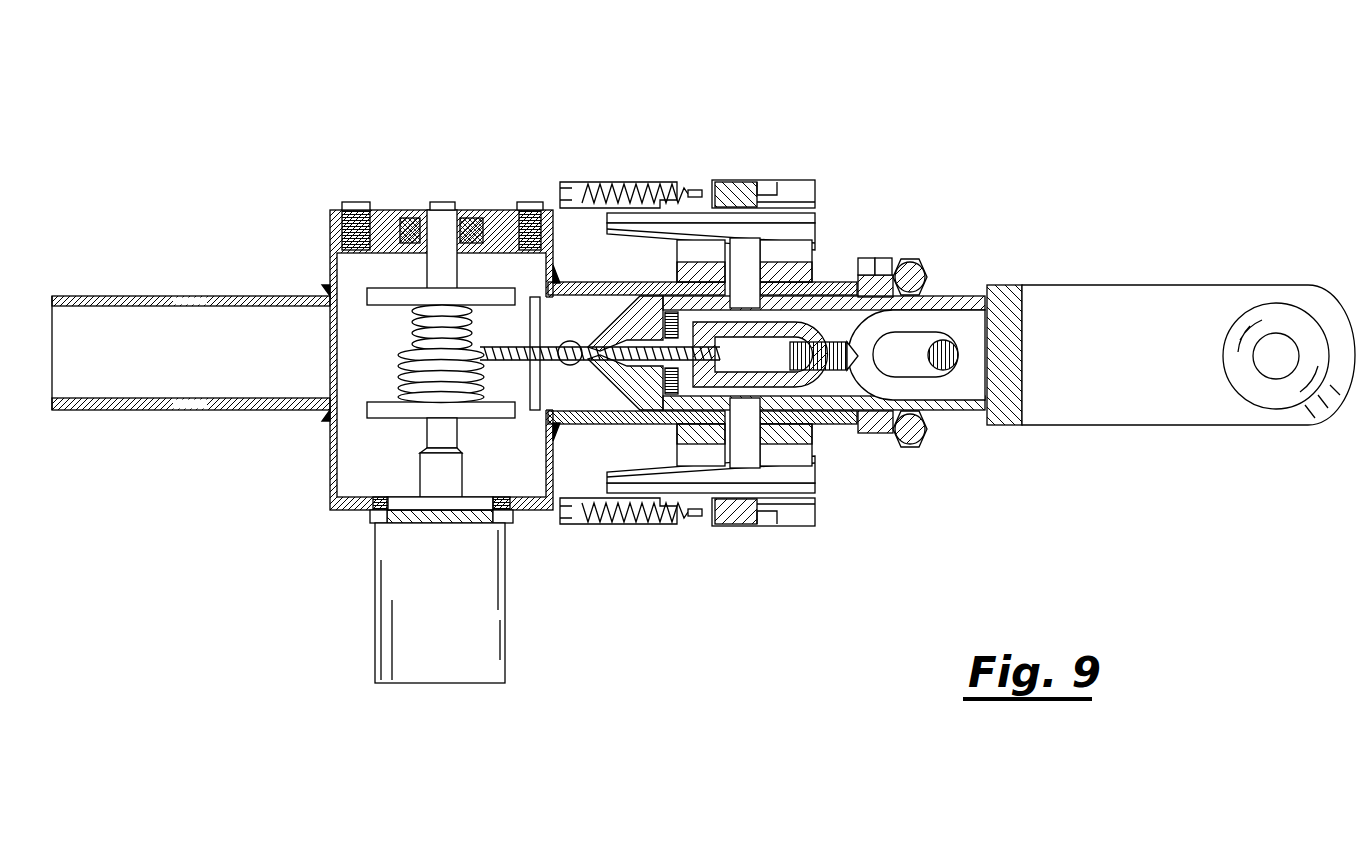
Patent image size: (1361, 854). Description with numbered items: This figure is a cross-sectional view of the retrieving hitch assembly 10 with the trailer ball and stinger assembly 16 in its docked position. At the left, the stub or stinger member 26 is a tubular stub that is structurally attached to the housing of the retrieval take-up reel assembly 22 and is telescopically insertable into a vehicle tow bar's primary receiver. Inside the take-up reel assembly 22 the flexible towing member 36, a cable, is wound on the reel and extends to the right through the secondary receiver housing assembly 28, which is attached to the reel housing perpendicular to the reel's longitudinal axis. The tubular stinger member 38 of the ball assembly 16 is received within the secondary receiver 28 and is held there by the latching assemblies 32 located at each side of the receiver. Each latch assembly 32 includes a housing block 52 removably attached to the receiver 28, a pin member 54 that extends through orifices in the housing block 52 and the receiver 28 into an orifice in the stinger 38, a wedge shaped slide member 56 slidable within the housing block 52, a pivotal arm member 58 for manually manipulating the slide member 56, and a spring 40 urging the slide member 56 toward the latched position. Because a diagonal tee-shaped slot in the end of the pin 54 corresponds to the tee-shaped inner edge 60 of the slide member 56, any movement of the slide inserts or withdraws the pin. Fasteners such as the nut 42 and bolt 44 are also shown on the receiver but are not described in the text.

The retrieving hitch assembly 10 is at (648, 108).
The trailer ball and stinger assembly 16 is at (1138, 238).
The retrieval take-up reel assembly 22 is at (402, 442).
The stub or stinger member 26 is at (148, 296).
The secondary receiver housing assembly 28 is at (832, 268).
The latching assembly 32 is at (720, 340).
The cable or flexible towing member 36 is at (412, 356).
The tubular stinger member 38 is at (950, 290).
The spring 40 is at (618, 182).
The nut 42 is at (908, 446).
The bolt 44 is at (927, 433).
The housing block 52 is at (677, 267).
The pin member 54 is at (742, 260).
The wedge shaped slide member 56 is at (808, 232).
The pivotal arm member 58 is at (735, 182).
The tee-shaped inner edge 60 is at (810, 460).